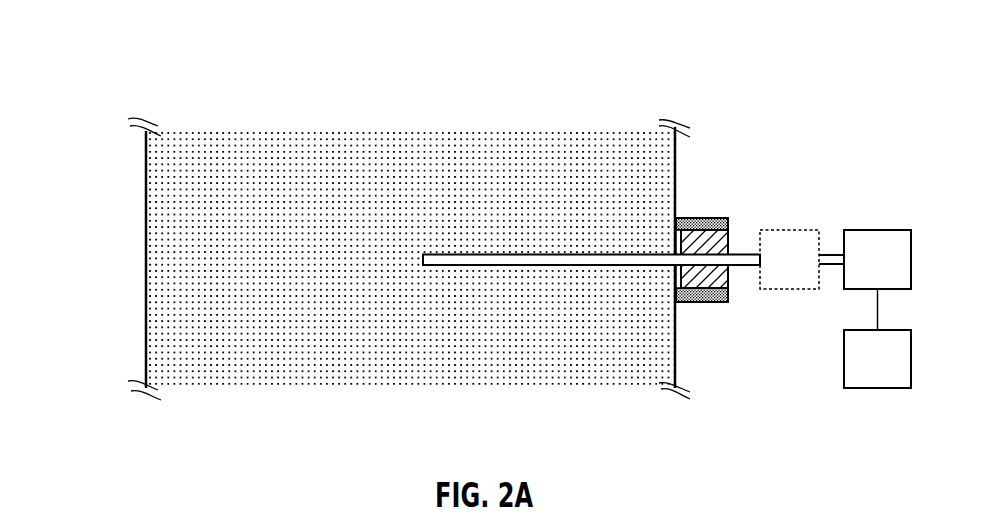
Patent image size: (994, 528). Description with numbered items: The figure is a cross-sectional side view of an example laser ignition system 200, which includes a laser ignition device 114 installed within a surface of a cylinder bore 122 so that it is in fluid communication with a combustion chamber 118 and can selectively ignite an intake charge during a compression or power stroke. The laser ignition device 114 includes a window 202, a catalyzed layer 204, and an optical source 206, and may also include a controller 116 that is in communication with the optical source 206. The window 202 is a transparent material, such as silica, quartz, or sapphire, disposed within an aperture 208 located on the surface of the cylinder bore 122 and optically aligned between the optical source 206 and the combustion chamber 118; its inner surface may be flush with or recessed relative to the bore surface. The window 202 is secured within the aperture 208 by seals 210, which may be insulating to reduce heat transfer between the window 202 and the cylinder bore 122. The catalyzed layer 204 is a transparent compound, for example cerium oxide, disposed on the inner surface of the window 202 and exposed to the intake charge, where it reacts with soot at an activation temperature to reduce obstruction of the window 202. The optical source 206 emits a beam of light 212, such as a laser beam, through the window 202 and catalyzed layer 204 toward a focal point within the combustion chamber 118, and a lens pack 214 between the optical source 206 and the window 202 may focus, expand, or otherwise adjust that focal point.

The laser ignition system 200 is at (137, 48).
The laser ignition device 114 is at (835, 248).
The controller 116 is at (896, 370).
The combustion chamber 118 is at (440, 196).
The cylinder bore 122 is at (673, 143).
The window 202 is at (730, 236).
The catalyzed layer 204 is at (676, 245).
The optical source 206 is at (896, 272).
The aperture 208 is at (651, 293).
The seals 210 is at (703, 217).
The beam of light 212 is at (563, 253).
The lens pack 214 is at (808, 272).